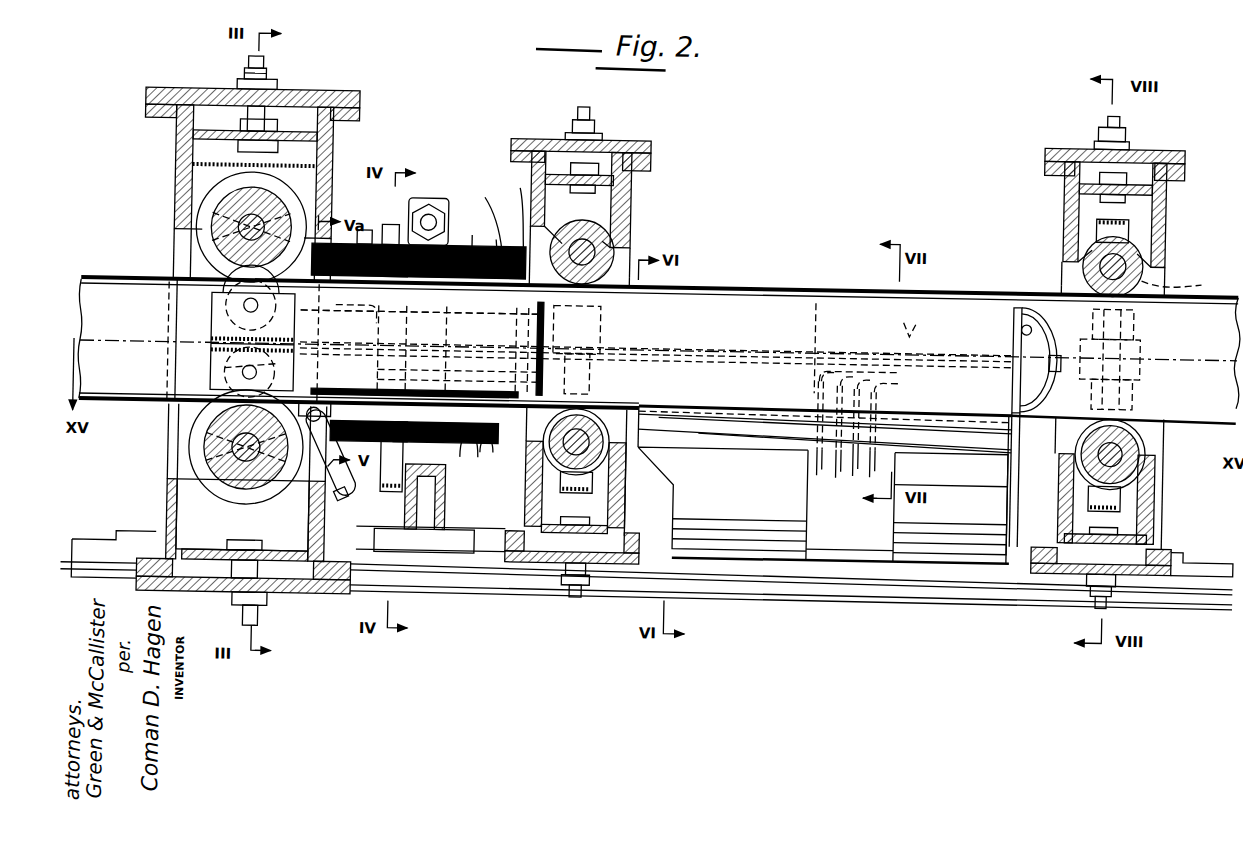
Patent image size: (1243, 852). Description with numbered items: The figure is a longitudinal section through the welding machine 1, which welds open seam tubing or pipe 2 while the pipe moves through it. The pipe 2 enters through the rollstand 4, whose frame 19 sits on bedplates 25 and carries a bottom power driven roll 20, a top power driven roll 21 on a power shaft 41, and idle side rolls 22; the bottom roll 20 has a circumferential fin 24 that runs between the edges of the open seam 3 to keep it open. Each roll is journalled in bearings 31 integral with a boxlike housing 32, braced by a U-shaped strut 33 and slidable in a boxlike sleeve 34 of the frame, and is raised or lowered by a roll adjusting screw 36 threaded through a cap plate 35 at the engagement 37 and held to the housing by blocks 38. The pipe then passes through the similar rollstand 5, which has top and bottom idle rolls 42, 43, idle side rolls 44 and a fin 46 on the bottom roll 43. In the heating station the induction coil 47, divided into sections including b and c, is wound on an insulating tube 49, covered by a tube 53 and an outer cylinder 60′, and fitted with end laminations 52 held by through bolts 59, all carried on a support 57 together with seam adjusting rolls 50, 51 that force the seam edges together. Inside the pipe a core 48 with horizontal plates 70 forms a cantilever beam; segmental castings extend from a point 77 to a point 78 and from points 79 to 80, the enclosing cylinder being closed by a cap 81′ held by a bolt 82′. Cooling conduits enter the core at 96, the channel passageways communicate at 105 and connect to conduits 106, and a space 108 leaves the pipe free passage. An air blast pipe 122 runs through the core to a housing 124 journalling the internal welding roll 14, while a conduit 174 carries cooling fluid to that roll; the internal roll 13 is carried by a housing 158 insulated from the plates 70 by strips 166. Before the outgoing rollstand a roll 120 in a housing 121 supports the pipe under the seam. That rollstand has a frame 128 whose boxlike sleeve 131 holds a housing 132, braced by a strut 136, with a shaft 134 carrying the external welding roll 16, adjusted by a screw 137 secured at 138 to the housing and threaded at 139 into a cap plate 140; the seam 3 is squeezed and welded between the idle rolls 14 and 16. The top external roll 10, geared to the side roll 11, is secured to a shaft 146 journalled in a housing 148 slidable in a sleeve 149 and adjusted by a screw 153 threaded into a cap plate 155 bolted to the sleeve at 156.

The machine 1 is at (773, 281).
The pipe 2 is at (100, 277).
The seam 3 is at (1200, 401).
The rollstand 4 is at (1184, 140).
The rollstand 5 is at (658, 148).
The top external roll 10 is at (240, 205).
The external side roll 11 is at (314, 400).
The internal roll 13 is at (222, 290).
The internal welding roll 14 is at (228, 385).
The external welding roll 16 is at (203, 426).
The frame 19 is at (630, 278).
The bottom power driven roll 20 is at (1165, 436).
The top power driven roll 21 is at (1145, 262).
The idle side roll 22 is at (1142, 340).
The circumferential fin 24 is at (1147, 428).
The bedplates 25 is at (1226, 557).
The bearings 31 is at (1135, 375).
The bearing housing 32 is at (628, 226).
The U-shaped strut 33 is at (1094, 213).
The boxlike sleeve 34 is at (633, 240).
The cap plate 35 is at (627, 131).
The roll adjusting screw 36 is at (575, 110).
The screw thread engagement 37 is at (560, 140).
The blocks 38 is at (600, 174).
The power shaft 41 is at (1140, 245).
The top idle roll 42 is at (578, 246).
The bottom idle roll 43 is at (656, 444).
The idle side roll 44 is at (605, 328).
The circumferential fin 46 is at (825, 430).
The induction coil 47 is at (334, 290).
The core 48 is at (351, 319).
The insulating tube 49 is at (493, 440).
The seam adjusting roll 50 is at (420, 354).
The seam adjusting roll 51 is at (460, 347).
The end laminations 52 is at (377, 215).
The insulating tube 53 is at (436, 434).
The support 57 is at (448, 500).
The insulated through bolts 59 is at (517, 213).
The insulating cylinder 60′ is at (486, 213).
The horizontal plates 70 is at (211, 341).
The point 77 is at (540, 273).
The point 78 is at (815, 300).
The point 79 is at (907, 302).
The point 80 is at (1030, 293).
The cap 81′ is at (1020, 313).
The bolt 82′ is at (1049, 384).
The conduit entry point 96 is at (880, 498).
The passageway communication 105 is at (360, 388).
The conduits 106 is at (856, 470).
The space 108 is at (168, 312).
The roll 120 is at (246, 447).
The housing 121 is at (338, 484).
The air blast pipe 122 is at (890, 358).
The housing 124 is at (225, 365).
The frame 128 is at (170, 450).
The boxlike sleeve 131 is at (172, 486).
The housing 132 is at (170, 493).
The shaft 134 is at (210, 446).
The strut 136 is at (242, 515).
The screw 137 is at (265, 612).
The rotatable securement 138 is at (240, 128).
The screw thread engagement 139 is at (236, 600).
The cap plate 140 is at (141, 590).
The shaft 146 is at (195, 215).
The housing 148 is at (174, 140).
The boxlike sleeve 149 is at (174, 120).
The screw 153 is at (243, 60).
The cap plate 155 is at (163, 86).
The cap plate securement 156 is at (232, 86).
The housing 158 is at (211, 305).
The insulation strips 166 is at (215, 336).
The cooling conduit 174 is at (743, 350).
The coil section b is at (470, 233).
The coil section c is at (494, 235).